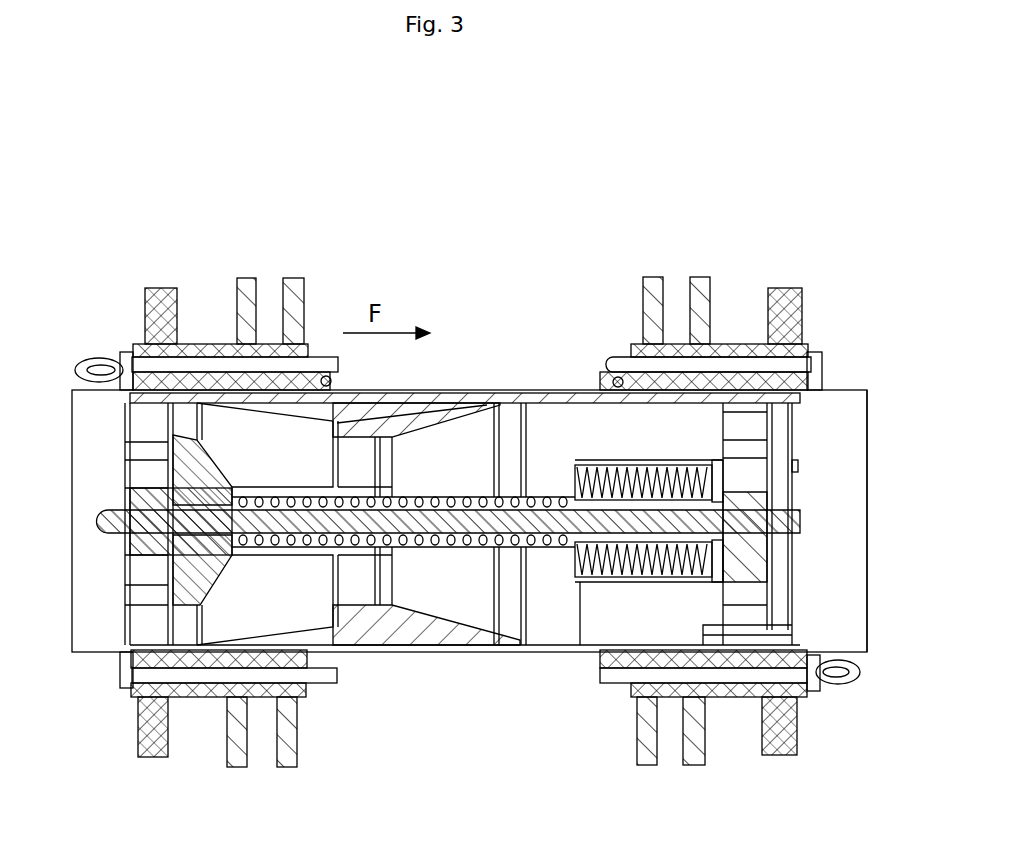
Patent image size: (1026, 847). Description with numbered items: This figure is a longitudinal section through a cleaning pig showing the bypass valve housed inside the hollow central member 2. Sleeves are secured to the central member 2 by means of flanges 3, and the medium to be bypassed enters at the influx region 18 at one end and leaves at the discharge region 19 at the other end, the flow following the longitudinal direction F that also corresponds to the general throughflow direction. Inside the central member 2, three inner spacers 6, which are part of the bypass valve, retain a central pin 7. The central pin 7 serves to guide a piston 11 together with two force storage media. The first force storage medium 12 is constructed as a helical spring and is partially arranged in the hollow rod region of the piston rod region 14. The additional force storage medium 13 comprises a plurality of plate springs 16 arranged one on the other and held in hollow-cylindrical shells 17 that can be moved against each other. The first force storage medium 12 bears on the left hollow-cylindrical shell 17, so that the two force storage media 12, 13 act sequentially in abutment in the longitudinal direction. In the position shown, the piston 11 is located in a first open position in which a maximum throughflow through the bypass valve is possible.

The central member 2 is at (483, 392).
The flange 3 is at (808, 352).
The inner spacer 6 is at (132, 575).
The central pin 7 is at (767, 522).
The piston 11 is at (205, 480).
The force storage medium 12 is at (470, 548).
The additional force storage medium 13 is at (597, 613).
The piston rod region 14 is at (360, 488).
The plate spring 16 is at (583, 467).
The hollow-cylindrical shell 17 is at (683, 467).
The influx region 18 is at (62, 413).
The discharge region 19 is at (858, 431).